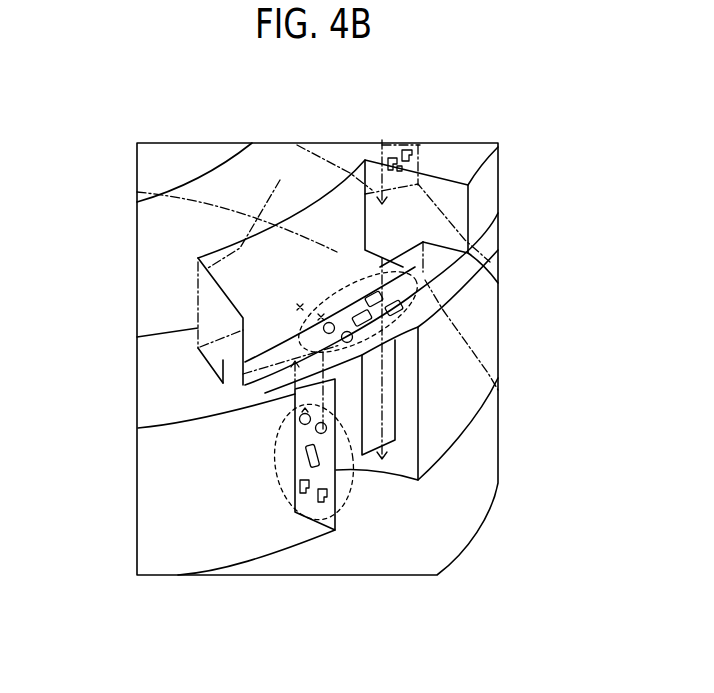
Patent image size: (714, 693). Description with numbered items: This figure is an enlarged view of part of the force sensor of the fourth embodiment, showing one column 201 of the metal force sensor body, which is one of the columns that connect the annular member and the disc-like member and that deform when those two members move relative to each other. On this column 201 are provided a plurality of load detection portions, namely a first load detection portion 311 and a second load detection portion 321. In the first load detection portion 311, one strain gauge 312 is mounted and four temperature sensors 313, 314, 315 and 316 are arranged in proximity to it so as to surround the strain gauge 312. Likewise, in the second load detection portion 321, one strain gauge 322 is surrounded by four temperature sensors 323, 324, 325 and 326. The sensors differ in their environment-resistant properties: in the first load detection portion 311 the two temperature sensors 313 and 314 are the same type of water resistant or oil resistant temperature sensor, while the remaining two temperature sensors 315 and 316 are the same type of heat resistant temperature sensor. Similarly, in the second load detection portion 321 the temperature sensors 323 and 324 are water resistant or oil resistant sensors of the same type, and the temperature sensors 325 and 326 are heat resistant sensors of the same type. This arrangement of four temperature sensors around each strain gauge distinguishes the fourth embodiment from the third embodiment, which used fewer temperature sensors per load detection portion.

The column 201 is at (408, 367).
The first load detection portion 311 is at (278, 502).
The strain gauge 312 is at (336, 466).
The temperature sensor 313 is at (300, 480).
The temperature sensor 314 is at (338, 490).
The temperature sensor 315 is at (300, 418).
The temperature sensor 316 is at (322, 424).
The second load detection portion 321 is at (312, 318).
The strain gauge 322 is at (356, 313).
The temperature sensor 323 is at (349, 332).
The temperature sensor 324 is at (402, 302).
The temperature sensor 325 is at (322, 320).
The temperature sensor 326 is at (329, 322).